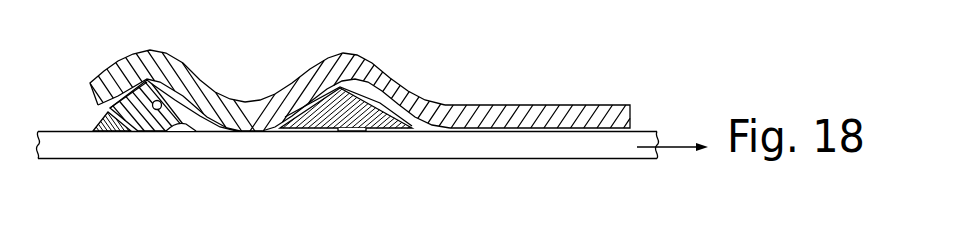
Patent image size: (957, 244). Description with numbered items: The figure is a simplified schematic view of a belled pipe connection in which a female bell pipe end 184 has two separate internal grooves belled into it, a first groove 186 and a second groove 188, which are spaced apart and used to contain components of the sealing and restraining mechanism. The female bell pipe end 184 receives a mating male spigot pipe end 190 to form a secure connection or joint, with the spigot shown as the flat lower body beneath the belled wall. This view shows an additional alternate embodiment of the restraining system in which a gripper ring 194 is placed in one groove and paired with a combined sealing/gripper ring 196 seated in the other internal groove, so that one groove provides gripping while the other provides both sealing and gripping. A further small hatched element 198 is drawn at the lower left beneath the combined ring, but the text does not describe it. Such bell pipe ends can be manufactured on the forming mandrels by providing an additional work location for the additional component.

The female bell pipe end 184 is at (503, 103).
The first groove 186 is at (197, 132).
The second groove 188 is at (377, 127).
The male spigot pipe end 190 is at (165, 152).
The gripper ring 194 is at (357, 90).
The combined sealing/gripper ring 196 is at (157, 52).
The lower left element 198 is at (105, 133).